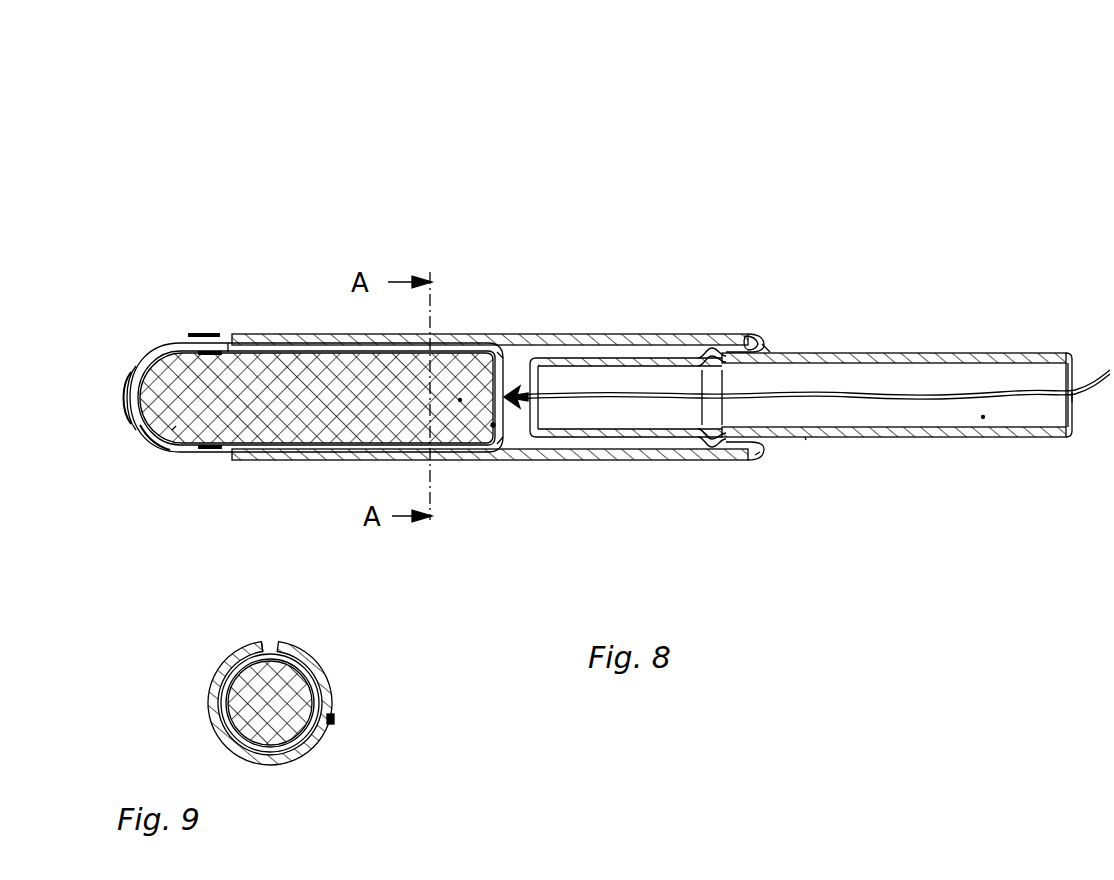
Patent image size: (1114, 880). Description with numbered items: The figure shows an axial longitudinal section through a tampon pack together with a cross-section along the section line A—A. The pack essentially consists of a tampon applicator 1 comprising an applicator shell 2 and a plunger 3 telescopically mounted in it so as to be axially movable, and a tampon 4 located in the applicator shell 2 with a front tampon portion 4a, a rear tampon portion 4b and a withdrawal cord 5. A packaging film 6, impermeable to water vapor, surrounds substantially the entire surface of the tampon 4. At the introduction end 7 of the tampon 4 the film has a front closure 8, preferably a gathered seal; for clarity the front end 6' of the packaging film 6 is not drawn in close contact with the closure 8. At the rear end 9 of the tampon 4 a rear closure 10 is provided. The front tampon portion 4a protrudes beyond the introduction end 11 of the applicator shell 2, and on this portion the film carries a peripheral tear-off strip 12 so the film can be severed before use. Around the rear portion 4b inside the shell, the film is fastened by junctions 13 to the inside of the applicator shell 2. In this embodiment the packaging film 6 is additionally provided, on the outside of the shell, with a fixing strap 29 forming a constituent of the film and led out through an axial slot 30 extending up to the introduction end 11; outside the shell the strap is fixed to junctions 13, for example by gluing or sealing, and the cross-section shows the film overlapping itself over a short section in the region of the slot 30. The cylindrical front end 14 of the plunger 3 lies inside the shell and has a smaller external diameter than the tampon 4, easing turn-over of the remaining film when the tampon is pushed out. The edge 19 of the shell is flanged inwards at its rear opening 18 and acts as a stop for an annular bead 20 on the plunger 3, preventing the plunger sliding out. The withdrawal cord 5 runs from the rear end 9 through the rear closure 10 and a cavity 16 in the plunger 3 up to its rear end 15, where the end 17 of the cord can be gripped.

In FIG. 8, the tampon applicator 1 is at (805, 438).
In FIG. 8, the applicator shell 2 is at (470, 343).
In FIG. 9, the applicator shell 2 is at (233, 658).
In FIG. 8, the plunger 3 is at (865, 353).
In FIG. 8, the tampon 4 is at (273, 442).
In FIG. 9, the tampon 4 is at (237, 705).
In FIG. 8, the front tampon portion 4a is at (175, 423).
In FIG. 8, the rear tampon portion 4b is at (460, 400).
In FIG. 8, the withdrawal cord 5 is at (922, 391).
In FIG. 8, the packaging film 6 is at (531, 313).
In FIG. 9, the packaging film 6 is at (197, 700).
In FIG. 8, the front end of the packaging film 6' is at (118, 278).
In FIG. 8, the introduction end of the tampon 7 is at (150, 423).
In FIG. 8, the front closure 8 is at (128, 420).
In FIG. 8, the rear end of the tampon 9 is at (493, 425).
In FIG. 8, the rear closure 10 is at (515, 405).
In FIG. 8, the introduction end of the applicator shell 11 is at (235, 342).
In FIG. 8, the tear-off strip 12 is at (200, 352).
In FIG. 9, the junctions 13 is at (334, 720).
In FIG. 8, the front end of the plunger 14 is at (540, 437).
In FIG. 8, the rear end of the plunger 15 is at (1070, 353).
In FIG. 8, the cavity 16 is at (983, 417).
In FIG. 8, the end of the withdrawal cord 17 is at (1108, 376).
In FIG. 8, the rear opening 18 is at (768, 342).
In FIG. 8, the flanged edge 19 is at (745, 338).
In FIG. 8, the annular bead 20 is at (705, 432).
In FIG. 8, the fixing strap 29 is at (282, 334).
In FIG. 9, the fixing strap 29 is at (315, 658).
In FIG. 9, the axial slot 30 is at (265, 648).